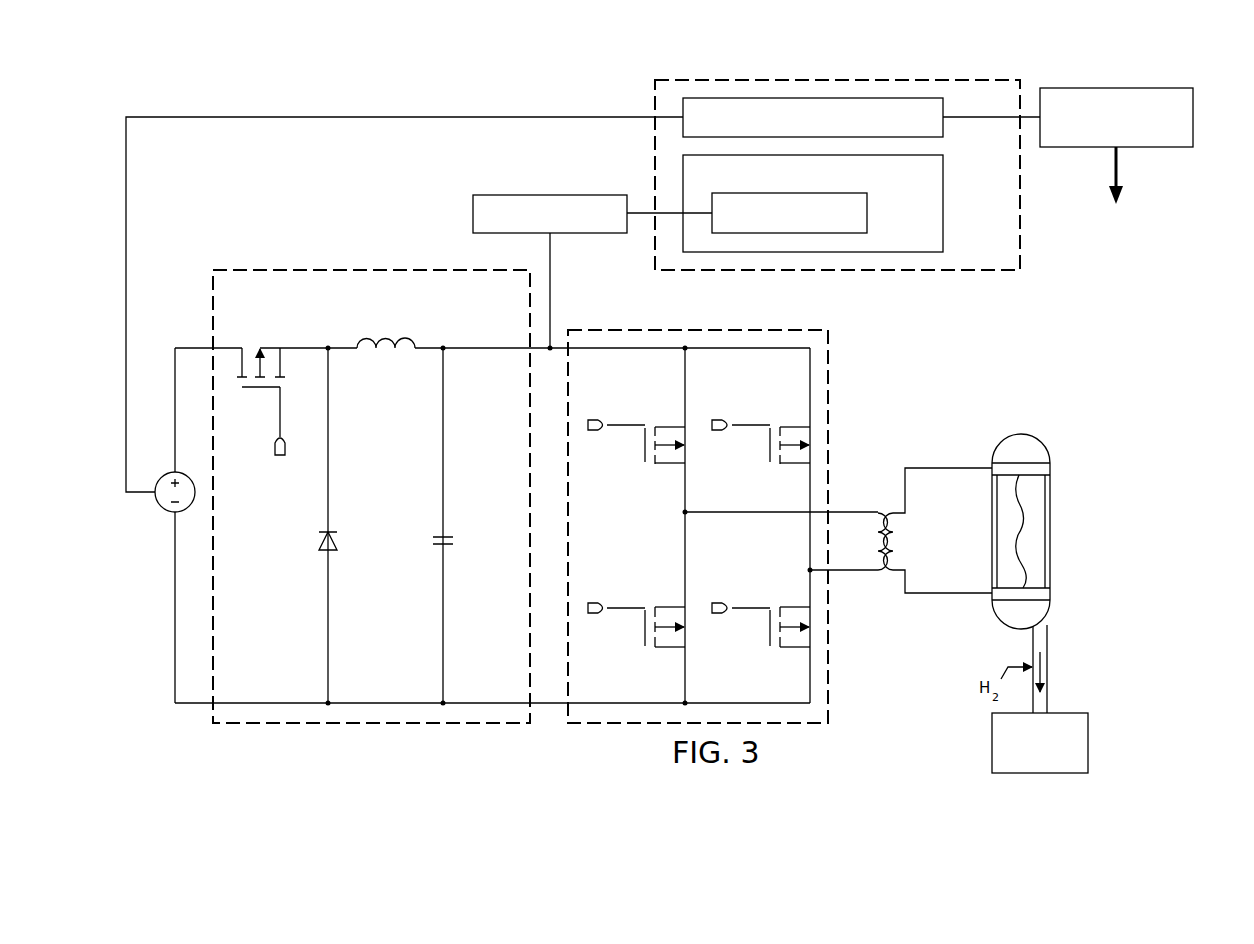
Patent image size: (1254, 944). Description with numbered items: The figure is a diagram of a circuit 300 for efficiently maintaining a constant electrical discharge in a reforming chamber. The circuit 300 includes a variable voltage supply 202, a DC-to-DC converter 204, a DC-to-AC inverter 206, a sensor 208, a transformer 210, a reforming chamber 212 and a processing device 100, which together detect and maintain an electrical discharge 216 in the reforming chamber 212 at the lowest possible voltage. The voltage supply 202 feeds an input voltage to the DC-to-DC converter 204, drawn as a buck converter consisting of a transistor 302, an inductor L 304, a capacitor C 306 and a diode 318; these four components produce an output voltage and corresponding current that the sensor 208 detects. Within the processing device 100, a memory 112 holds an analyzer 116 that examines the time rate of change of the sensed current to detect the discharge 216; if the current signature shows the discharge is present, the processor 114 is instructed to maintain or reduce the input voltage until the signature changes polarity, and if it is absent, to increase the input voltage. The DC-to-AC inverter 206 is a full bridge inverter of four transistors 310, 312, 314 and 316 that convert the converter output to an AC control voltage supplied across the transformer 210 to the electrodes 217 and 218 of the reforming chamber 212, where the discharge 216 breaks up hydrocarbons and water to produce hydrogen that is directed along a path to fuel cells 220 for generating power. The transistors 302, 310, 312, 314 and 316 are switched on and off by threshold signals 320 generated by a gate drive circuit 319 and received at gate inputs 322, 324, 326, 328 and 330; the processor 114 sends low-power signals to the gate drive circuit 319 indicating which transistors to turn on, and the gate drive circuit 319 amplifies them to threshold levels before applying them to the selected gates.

The processing device 100 is at (897, 75).
The memory 112 is at (943, 205).
The processor 114 is at (943, 108).
The analyzer 116 is at (867, 213).
The variable voltage supply 202 is at (163, 507).
The DC-to-DC converter 204 is at (268, 726).
The DC-to-AC inverter 206 is at (613, 726).
The sensor 208 is at (540, 193).
The transformer 210 is at (885, 576).
The reforming chamber 212 is at (1036, 432).
The electrical discharge 216 is at (1027, 555).
The electrode 217 is at (1050, 468).
The electrode 218 is at (1048, 592).
The fuel cells 220 is at (1088, 748).
The circuit 300 is at (1138, 679).
The transistor 302 is at (250, 392).
The inductor L 304 is at (380, 333).
The capacitor C 306 is at (453, 541).
The transistor 310 is at (643, 452).
The transistor 312 is at (643, 636).
The transistor 314 is at (768, 452).
The transistor 316 is at (768, 636).
The diode 318 is at (318, 545).
The gate drive circuit 319 is at (1136, 88).
The threshold signals 320 is at (1118, 165).
The gate input 322 is at (278, 458).
The gate input 324 is at (592, 418).
The gate input 326 is at (592, 600).
The gate input 328 is at (717, 418).
The gate input 330 is at (717, 600).